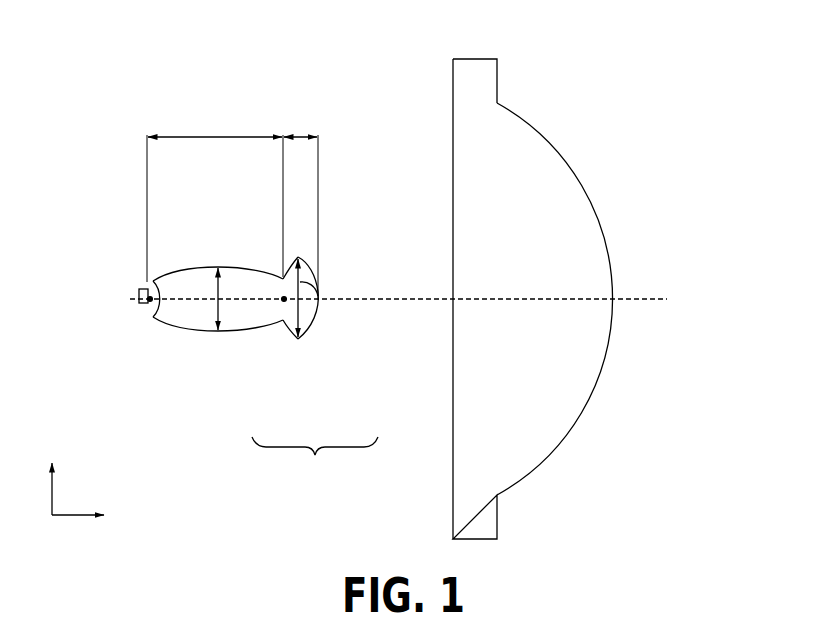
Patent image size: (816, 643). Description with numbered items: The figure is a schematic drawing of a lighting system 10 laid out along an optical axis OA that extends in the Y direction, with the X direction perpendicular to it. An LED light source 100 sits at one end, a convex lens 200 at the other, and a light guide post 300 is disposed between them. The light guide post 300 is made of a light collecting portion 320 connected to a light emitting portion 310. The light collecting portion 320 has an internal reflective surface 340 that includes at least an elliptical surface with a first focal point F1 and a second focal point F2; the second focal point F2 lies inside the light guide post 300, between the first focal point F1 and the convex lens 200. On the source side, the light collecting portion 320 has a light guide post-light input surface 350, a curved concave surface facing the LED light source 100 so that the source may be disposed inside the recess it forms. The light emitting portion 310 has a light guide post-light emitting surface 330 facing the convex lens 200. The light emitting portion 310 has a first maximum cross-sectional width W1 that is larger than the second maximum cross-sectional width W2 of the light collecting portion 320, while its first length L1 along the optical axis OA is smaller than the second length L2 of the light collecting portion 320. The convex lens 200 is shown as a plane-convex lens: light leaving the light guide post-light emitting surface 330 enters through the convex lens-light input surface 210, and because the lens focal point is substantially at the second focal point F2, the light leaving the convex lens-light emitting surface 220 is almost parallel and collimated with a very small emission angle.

The lighting system 10 is at (72, 86).
The LED light source 100 is at (146, 307).
The convex lens 200 is at (524, 299).
The convex lens-light input surface 210 is at (451, 212).
The convex lens-light emitting surface 220 is at (603, 224).
The light guide post 300 is at (315, 463).
The light emitting portion 310 is at (335, 345).
The light collecting portion 320 is at (173, 322).
The light guide post-light emitting surface 330 is at (321, 313).
The internal reflective surface 340 is at (198, 269).
The light guide post-light input surface 350 is at (147, 284).
The first focal point F1 is at (150, 304).
The second focal point F2 is at (284, 303).
The first maximum cross-sectional width W1 is at (325, 298).
The second maximum cross-sectional width W2 is at (240, 299).
The first length L1 is at (301, 202).
The second length L2 is at (215, 193).
The optical axis OA is at (640, 301).
The X direction X is at (52, 475).
The Y direction Y is at (86, 515).